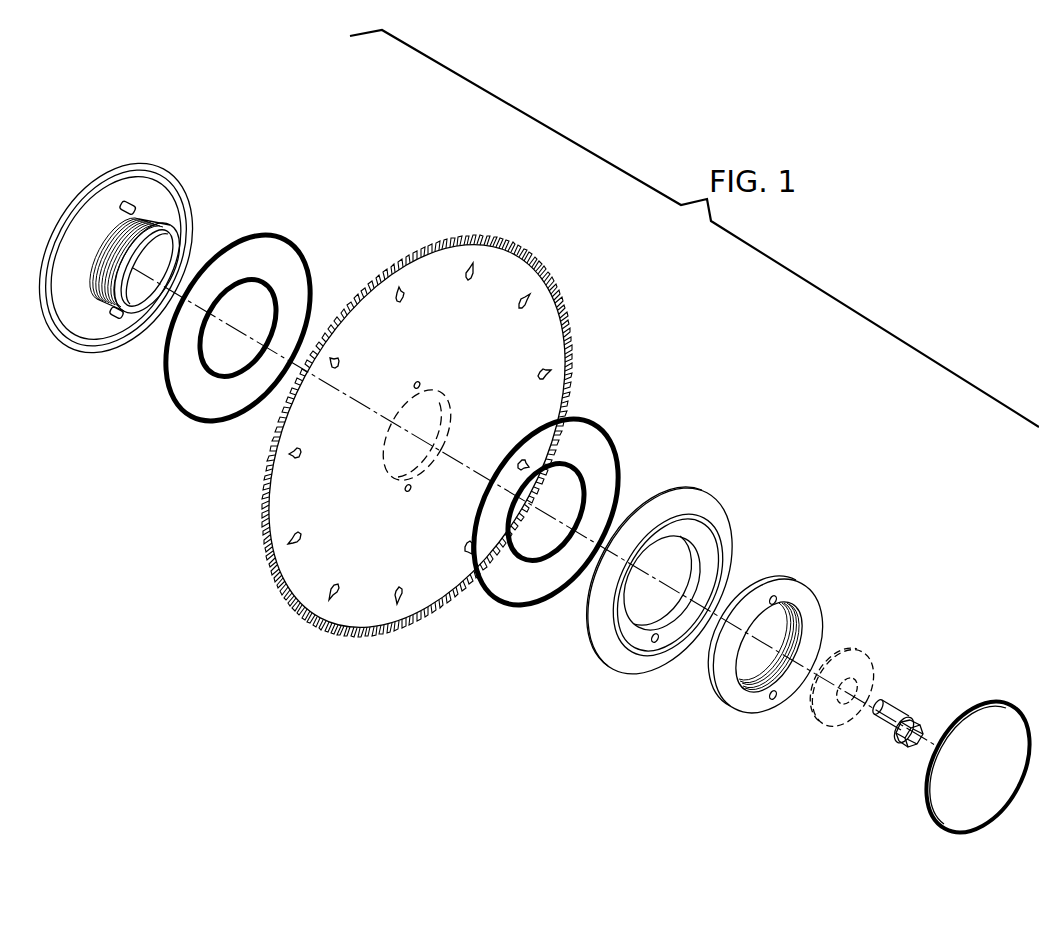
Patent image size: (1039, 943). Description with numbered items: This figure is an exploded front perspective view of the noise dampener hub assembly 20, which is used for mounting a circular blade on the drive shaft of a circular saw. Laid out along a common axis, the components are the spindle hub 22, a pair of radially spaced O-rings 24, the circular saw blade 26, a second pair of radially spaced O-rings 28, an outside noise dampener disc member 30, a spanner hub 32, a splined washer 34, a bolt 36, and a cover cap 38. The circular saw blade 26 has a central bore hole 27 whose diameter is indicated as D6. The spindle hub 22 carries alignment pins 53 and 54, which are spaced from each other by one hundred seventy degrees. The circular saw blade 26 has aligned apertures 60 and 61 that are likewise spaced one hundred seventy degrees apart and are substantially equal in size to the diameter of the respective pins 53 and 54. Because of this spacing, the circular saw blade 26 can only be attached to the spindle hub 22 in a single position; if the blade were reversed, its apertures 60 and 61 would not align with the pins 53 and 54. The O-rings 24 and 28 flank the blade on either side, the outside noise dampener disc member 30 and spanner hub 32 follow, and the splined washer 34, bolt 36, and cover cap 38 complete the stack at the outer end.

The noise dampener hub assembly 20 is at (727, 343).
The spindle hub 22 is at (131, 258).
The pair of radially spaced O-rings 24 is at (275, 297).
The circular saw blade 26 is at (417, 435).
The bore hole 27 is at (388, 452).
The pair of radially spaced O-rings 28 is at (583, 475).
The outside noise dampener disc member 30 is at (713, 485).
The spanner hub 32 is at (808, 580).
The splined washer 34 is at (870, 652).
The bolt 36 is at (923, 707).
The cover cap 38 is at (972, 767).
The alignment pin 53 is at (117, 318).
The alignment pin 54 is at (140, 202).
The aperture 60 is at (410, 491).
The aperture 61 is at (419, 383).
The diameter of bore hole D6 is at (363, 525).